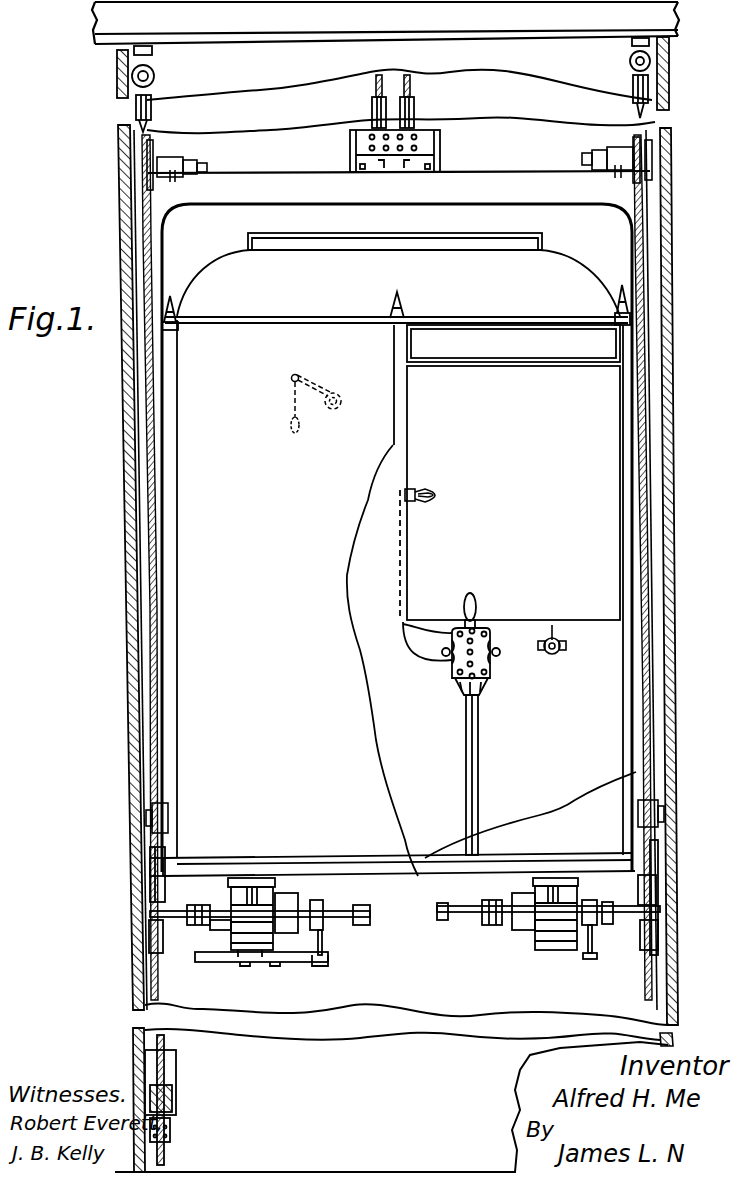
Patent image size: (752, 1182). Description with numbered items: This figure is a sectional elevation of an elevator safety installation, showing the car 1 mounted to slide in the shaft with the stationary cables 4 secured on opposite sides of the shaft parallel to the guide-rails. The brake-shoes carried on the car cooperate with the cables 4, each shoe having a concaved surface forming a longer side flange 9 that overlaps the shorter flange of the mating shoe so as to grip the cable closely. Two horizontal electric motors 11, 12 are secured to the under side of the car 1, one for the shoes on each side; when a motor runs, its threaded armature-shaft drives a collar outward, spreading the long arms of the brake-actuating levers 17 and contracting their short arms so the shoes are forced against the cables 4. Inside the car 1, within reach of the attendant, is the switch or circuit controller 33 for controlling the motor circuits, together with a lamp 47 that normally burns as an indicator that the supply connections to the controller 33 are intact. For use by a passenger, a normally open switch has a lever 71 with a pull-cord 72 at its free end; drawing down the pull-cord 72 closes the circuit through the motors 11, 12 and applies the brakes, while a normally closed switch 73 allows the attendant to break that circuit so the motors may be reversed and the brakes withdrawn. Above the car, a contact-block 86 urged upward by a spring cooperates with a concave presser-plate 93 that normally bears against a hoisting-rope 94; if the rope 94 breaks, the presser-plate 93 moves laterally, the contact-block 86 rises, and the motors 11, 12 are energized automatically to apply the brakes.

The car 1 is at (393, 540).
The cables 4 is at (150, 778).
The side flange 9 is at (150, 939).
The electric motor 11 is at (232, 936).
The electric motor 12 is at (535, 939).
The brake-actuating levers 17 is at (193, 918).
The switch or circuit controller 33 is at (481, 628).
The lamp 47 is at (425, 484).
The lever 71 is at (300, 381).
The pull-cord 72 is at (295, 433).
The switch 73 is at (553, 654).
The contact-block 86 is at (406, 167).
The presser-plate 93 is at (372, 110).
The hoisting-rope 94 is at (383, 82).